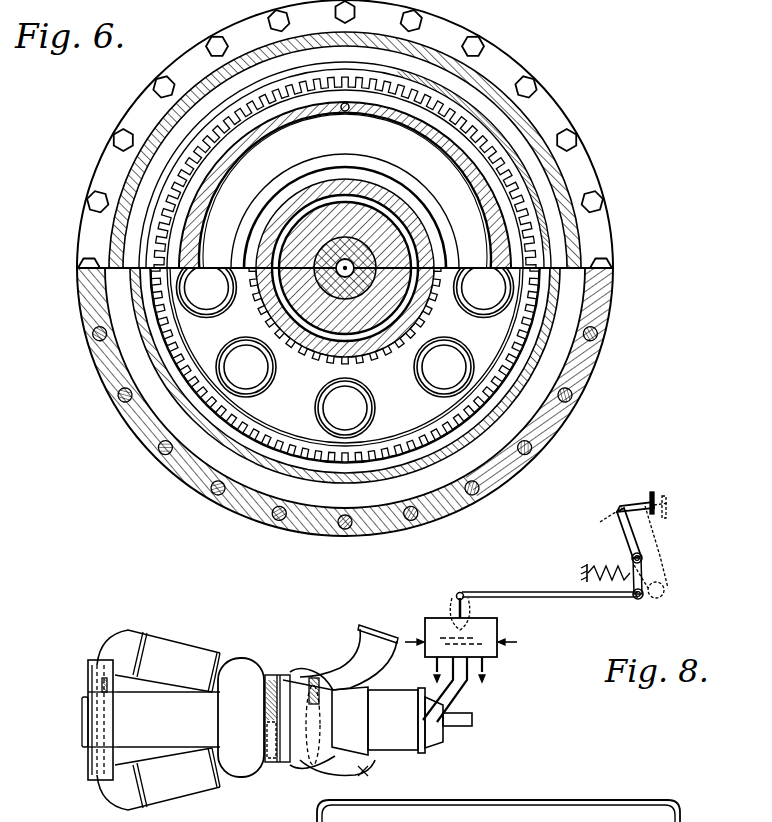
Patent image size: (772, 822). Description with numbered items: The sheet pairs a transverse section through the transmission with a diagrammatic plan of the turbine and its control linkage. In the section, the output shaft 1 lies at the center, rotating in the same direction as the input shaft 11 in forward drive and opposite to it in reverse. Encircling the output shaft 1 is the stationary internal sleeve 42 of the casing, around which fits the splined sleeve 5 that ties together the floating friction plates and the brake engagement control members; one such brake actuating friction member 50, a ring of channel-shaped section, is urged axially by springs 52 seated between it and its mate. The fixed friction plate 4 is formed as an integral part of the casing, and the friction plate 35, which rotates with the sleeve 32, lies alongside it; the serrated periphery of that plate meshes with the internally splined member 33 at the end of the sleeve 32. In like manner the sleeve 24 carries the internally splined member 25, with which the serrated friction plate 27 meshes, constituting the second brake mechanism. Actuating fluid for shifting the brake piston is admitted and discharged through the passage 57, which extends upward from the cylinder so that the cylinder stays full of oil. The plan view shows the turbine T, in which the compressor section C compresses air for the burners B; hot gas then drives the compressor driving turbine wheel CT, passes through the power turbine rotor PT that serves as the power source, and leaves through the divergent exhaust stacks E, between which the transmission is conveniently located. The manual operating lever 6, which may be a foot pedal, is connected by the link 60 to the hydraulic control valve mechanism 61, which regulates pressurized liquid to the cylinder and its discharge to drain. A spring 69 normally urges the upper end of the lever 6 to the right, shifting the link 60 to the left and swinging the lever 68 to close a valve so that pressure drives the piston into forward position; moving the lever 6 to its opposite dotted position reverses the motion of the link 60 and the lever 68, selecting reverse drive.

In FIG. 6, the output shaft 1 is at (310, 237).
In FIG. 8, the output shaft 1 is at (462, 713).
In FIG. 6, the fixed friction plate 4 is at (349, 139).
In FIG. 6, the sleeve 5 is at (388, 190).
In FIG. 8, the manual operating lever 6 is at (621, 510).
In FIG. 6, the input shaft 11 is at (330, 260).
In FIG. 6, the sleeve 24 is at (237, 431).
In FIG. 6, the internally splined member 25 is at (297, 456).
In FIG. 6, the friction plate 27 is at (290, 444).
In FIG. 6, the sleeve 32 is at (293, 100).
In FIG. 6, the internally splined member 33 is at (437, 104).
In FIG. 6, the friction plate 35 is at (453, 118).
In FIG. 6, the internal sleeve 42 is at (405, 222).
In FIG. 6, the brake actuating friction member 50 is at (418, 414).
In FIG. 6, the spring 52 is at (272, 376).
In FIG. 6, the passage 57 is at (348, 110).
In FIG. 8, the link 60 is at (535, 592).
In FIG. 8, the hydraulic control valve mechanism 61 is at (498, 631).
In FIG. 8, the lever 68 is at (455, 614).
In FIG. 8, the spring 69 is at (600, 571).
In FIG. 6, the turbine T is at (540, 128).
In FIG. 8, the turbine T is at (405, 746).
In FIG. 8, the burners B is at (163, 644).
In FIG. 8, the compressor driving turbine wheel CT is at (270, 673).
In FIG. 8, the compressor section C is at (100, 692).
In FIG. 8, the exhaust stacks E is at (364, 642).
In FIG. 8, the power turbine rotor PT is at (312, 760).